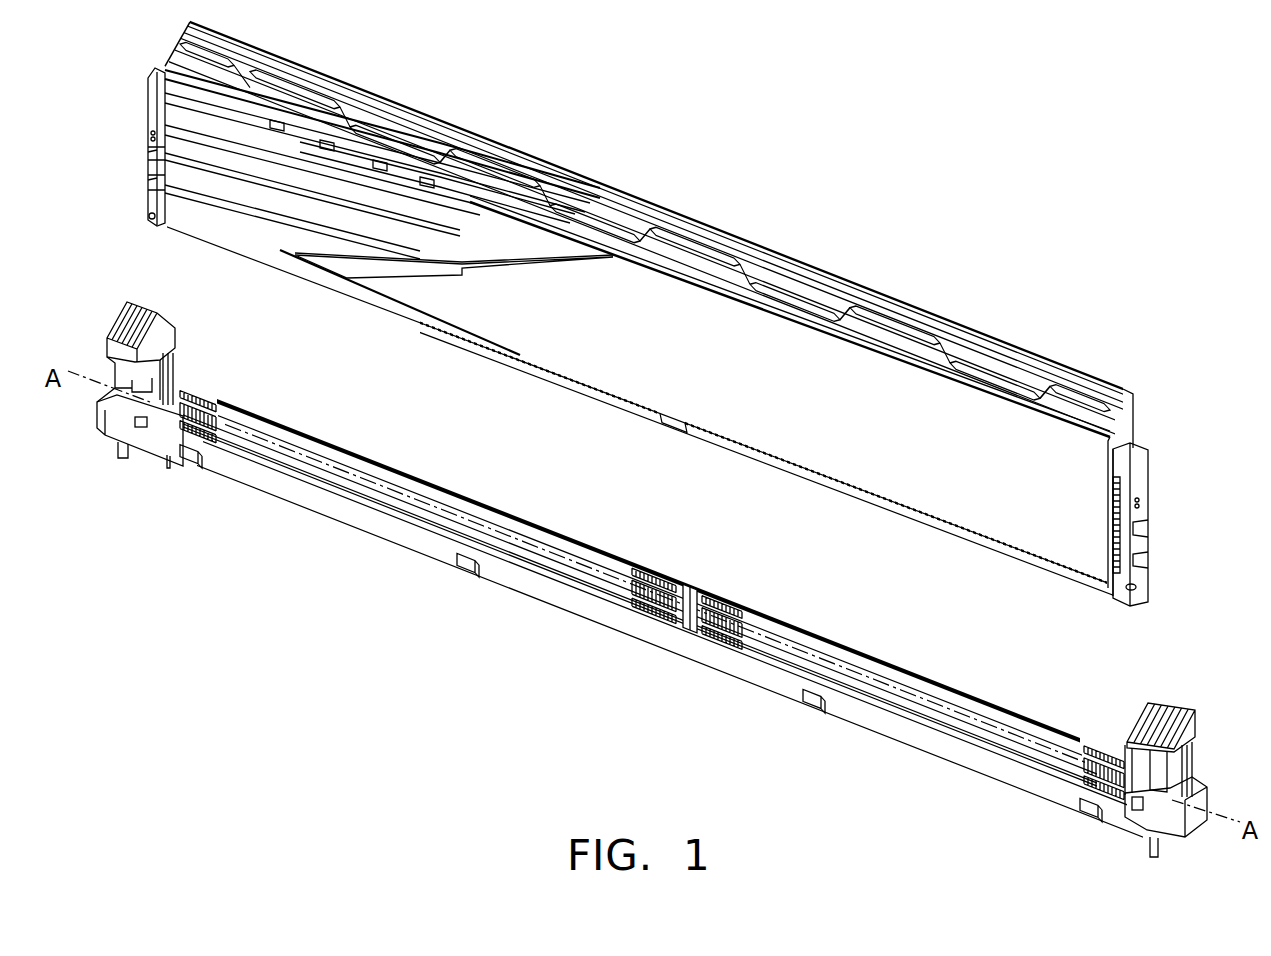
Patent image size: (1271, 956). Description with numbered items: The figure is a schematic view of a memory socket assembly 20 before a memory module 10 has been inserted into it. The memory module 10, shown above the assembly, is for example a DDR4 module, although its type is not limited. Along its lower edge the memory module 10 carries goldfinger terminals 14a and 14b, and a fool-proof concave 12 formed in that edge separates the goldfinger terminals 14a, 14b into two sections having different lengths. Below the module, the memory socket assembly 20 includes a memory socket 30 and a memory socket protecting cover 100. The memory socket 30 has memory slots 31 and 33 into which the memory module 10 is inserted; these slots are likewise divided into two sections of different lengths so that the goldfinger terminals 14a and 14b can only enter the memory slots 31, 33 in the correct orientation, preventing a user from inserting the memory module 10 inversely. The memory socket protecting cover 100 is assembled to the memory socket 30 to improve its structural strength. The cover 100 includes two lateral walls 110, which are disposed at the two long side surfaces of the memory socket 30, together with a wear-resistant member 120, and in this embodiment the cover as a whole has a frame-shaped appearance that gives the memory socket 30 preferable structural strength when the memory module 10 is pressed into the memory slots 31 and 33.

The memory module 10 is at (1140, 443).
The fool-proof concave 12 is at (688, 429).
The goldfinger terminal 14a is at (540, 370).
The goldfinger terminal 14b is at (870, 496).
The memory socket assembly 20 is at (665, 579).
The memory socket 30 is at (760, 614).
The memory slot 31 is at (283, 447).
The memory slot 33 is at (863, 680).
The memory socket protecting cover 100 is at (478, 750).
The lateral wall 110 is at (673, 580).
The wear-resistant member 120 is at (680, 628).